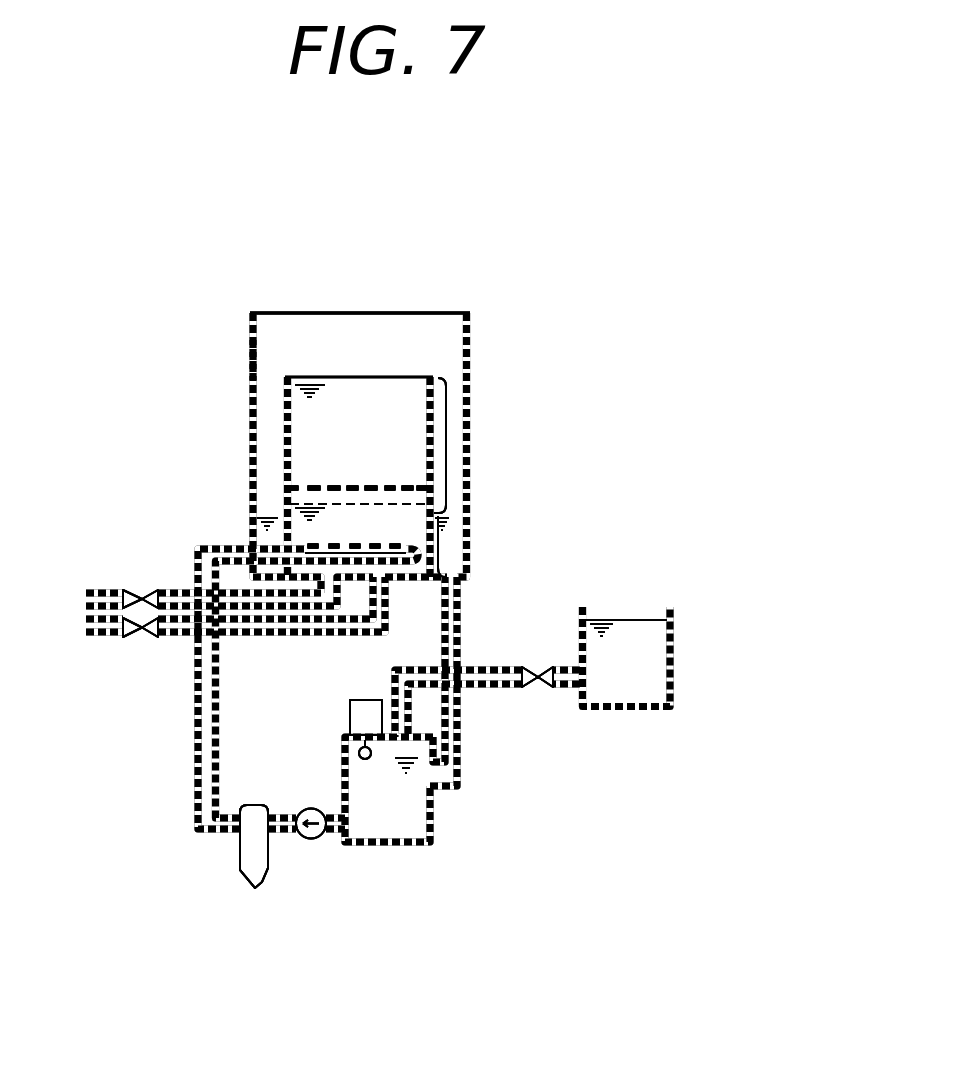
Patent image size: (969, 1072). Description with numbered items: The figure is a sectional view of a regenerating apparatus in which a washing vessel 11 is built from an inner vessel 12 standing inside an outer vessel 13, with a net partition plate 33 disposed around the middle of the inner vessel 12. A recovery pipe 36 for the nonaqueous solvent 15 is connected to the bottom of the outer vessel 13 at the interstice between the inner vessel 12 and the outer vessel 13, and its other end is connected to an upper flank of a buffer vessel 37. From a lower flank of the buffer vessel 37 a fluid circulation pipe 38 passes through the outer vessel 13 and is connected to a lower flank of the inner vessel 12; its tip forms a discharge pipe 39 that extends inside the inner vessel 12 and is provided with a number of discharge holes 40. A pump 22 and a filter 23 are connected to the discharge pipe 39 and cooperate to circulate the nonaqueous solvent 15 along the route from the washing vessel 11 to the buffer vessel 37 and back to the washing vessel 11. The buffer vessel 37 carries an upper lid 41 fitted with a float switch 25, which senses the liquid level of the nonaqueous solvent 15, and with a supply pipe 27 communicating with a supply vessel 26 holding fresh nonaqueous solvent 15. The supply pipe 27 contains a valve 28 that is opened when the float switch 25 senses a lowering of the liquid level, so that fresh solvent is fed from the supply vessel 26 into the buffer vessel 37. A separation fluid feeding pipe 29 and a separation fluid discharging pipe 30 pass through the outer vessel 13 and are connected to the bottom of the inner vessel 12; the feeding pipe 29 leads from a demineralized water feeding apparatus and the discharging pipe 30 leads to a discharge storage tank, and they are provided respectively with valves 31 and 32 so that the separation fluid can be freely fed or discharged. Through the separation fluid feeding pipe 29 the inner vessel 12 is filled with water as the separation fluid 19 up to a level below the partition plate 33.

The washing vessel 11 is at (478, 352).
The inner vessel 12 is at (285, 400).
The outer vessel 13 is at (250, 357).
The nonaqueous solvent 15 is at (448, 430).
The separation fluid 19 is at (447, 543).
The pump 22 is at (311, 838).
The filter 23 is at (245, 868).
The float switch 25 is at (352, 714).
The supply vessel 26 is at (581, 633).
The supply pipe 27 is at (489, 688).
The valve 28 is at (543, 688).
The separation fluid feeding pipe 29 is at (105, 640).
The separation fluid discharging pipe 30 is at (104, 588).
The valve 31 is at (150, 640).
The valve 32 is at (150, 588).
The net partition plate 33 is at (313, 487).
The recovery pipe 36 is at (461, 630).
The buffer vessel 37 is at (436, 820).
The fluid circulation pipe 38 is at (195, 745).
The discharge pipe 39 is at (400, 572).
The discharge holes 40 is at (337, 547).
The upper lid 41 is at (343, 737).